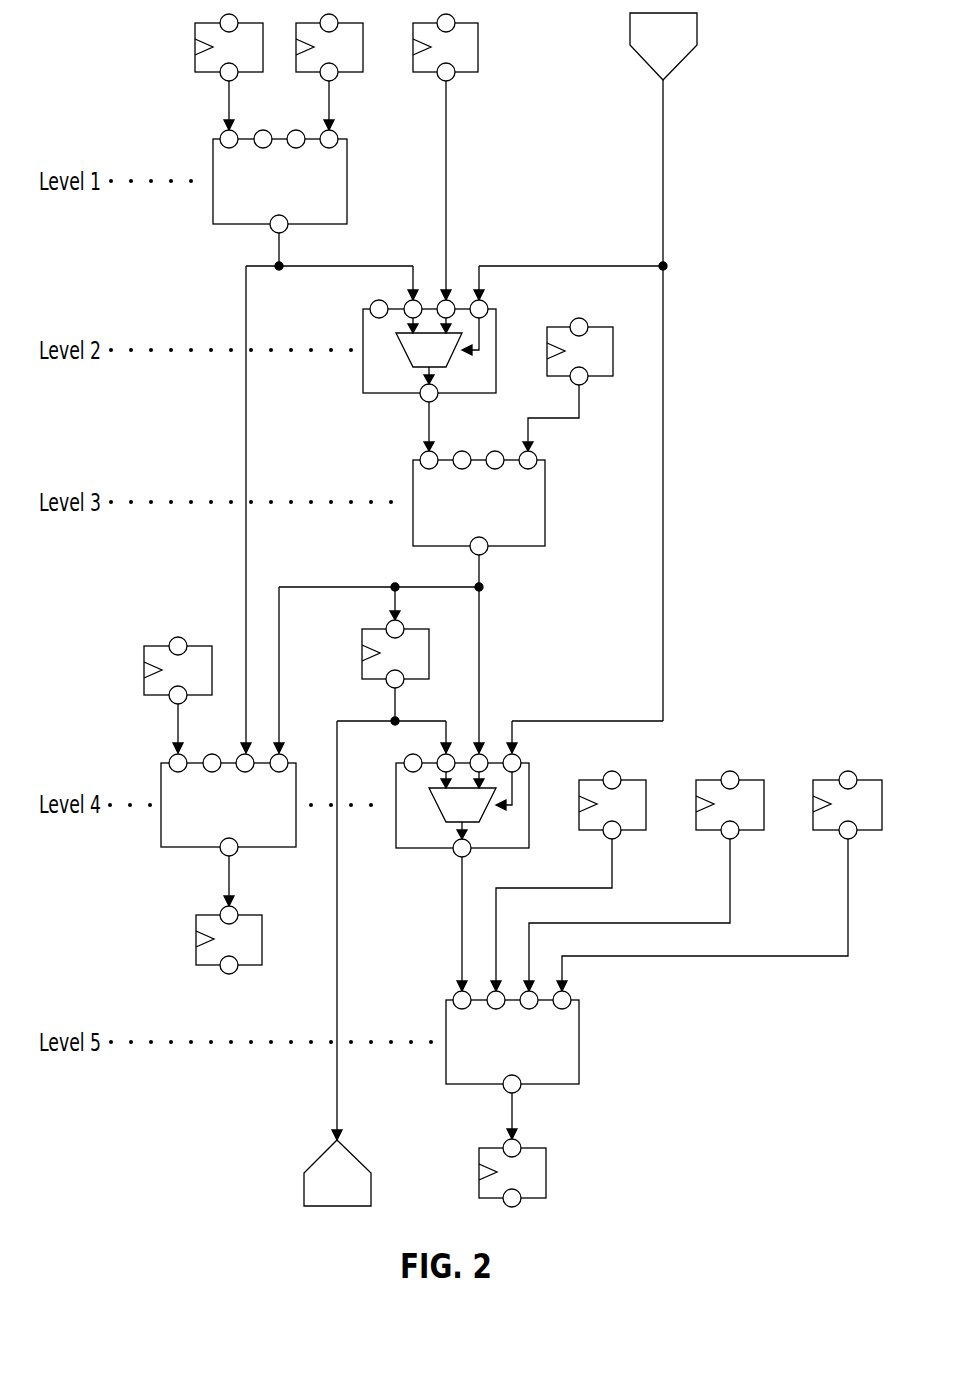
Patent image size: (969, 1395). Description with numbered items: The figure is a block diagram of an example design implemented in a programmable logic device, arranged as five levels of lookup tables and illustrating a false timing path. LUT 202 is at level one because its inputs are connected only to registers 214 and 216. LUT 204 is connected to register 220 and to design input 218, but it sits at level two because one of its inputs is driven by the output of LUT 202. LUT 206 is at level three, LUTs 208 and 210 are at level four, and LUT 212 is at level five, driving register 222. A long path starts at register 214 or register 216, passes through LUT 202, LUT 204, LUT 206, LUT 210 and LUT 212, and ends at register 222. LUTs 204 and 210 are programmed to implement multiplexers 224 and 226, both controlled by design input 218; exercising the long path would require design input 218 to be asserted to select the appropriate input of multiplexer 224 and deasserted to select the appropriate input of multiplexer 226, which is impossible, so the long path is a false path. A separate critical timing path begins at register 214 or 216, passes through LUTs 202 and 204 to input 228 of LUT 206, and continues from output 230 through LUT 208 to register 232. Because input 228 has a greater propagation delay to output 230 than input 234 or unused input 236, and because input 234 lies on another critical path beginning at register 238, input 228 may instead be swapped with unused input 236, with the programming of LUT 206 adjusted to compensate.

The LUT 202 is at (213, 168).
The LUT 204 is at (405, 350).
The LUT 206 is at (482, 496).
The LUT 208 is at (161, 792).
The LUT 210 is at (438, 804).
The LUT 212 is at (446, 1032).
The register 214 is at (213, 74).
The register 216 is at (313, 74).
The design input 218 is at (630, 24).
The register 220 is at (432, 74).
The register 222 is at (490, 1146).
The multiplexer 224 is at (397, 342).
The multiplexer 226 is at (431, 798).
The input 228 is at (421, 450).
The output 230 is at (485, 553).
The register 232 is at (206, 913).
The input 234 is at (536, 452).
The unused input 236 is at (496, 452).
The register 238 is at (558, 326).